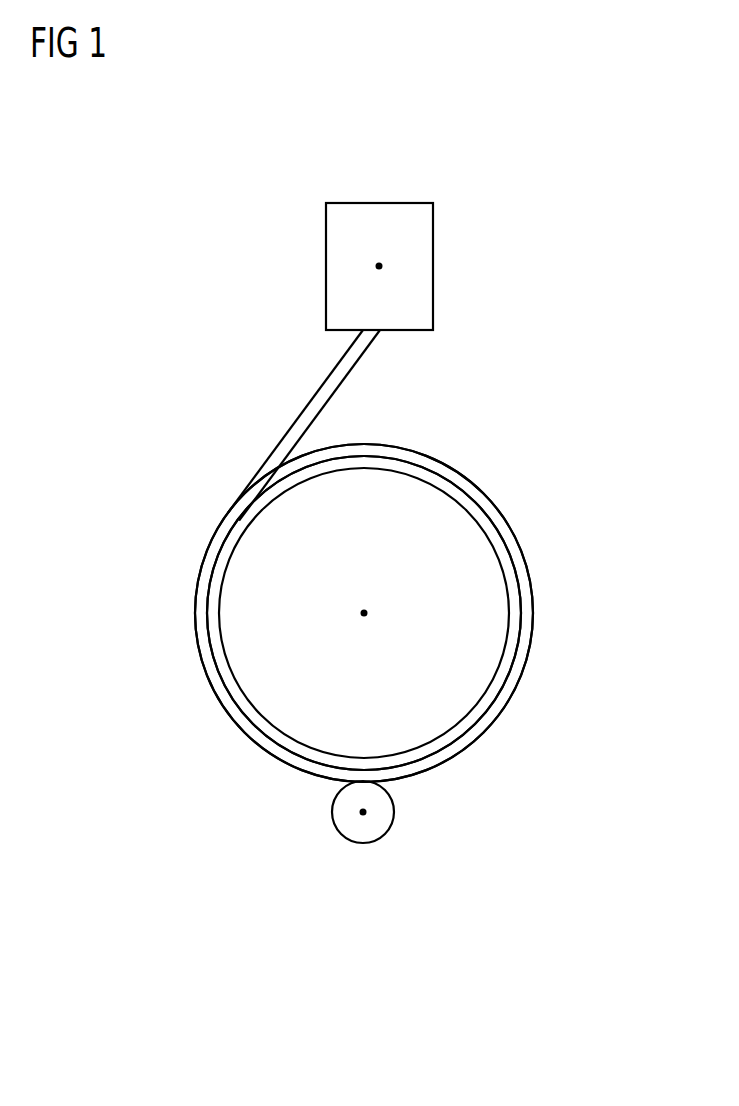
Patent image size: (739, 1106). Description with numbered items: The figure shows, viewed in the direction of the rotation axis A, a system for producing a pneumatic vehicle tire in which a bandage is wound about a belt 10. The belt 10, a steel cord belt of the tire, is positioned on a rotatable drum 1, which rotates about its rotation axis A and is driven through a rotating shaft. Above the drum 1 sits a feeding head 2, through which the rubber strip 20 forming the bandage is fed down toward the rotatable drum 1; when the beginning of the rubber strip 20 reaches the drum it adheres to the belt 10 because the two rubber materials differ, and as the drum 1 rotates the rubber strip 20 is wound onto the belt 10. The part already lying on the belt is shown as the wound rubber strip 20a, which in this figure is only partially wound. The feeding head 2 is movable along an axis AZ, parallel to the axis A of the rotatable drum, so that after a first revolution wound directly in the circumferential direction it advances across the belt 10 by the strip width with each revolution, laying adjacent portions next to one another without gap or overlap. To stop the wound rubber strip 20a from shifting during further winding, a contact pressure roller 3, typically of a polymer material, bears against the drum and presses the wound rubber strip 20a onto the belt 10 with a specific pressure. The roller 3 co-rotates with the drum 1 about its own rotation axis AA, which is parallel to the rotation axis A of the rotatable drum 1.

The rotatable drum 1 is at (472, 510).
The belt 10 is at (508, 542).
The feeding head 2 is at (433, 262).
The rubber strip 20 is at (315, 396).
The wound rubber strip 20a is at (196, 604).
The contact pressure roller 3 is at (394, 812).
The rotation axis of the rotatable drum A is at (364, 613).
The axis of movement of the feeding head AZ is at (379, 266).
The rotation axis of the contact pressure roller AA is at (363, 812).